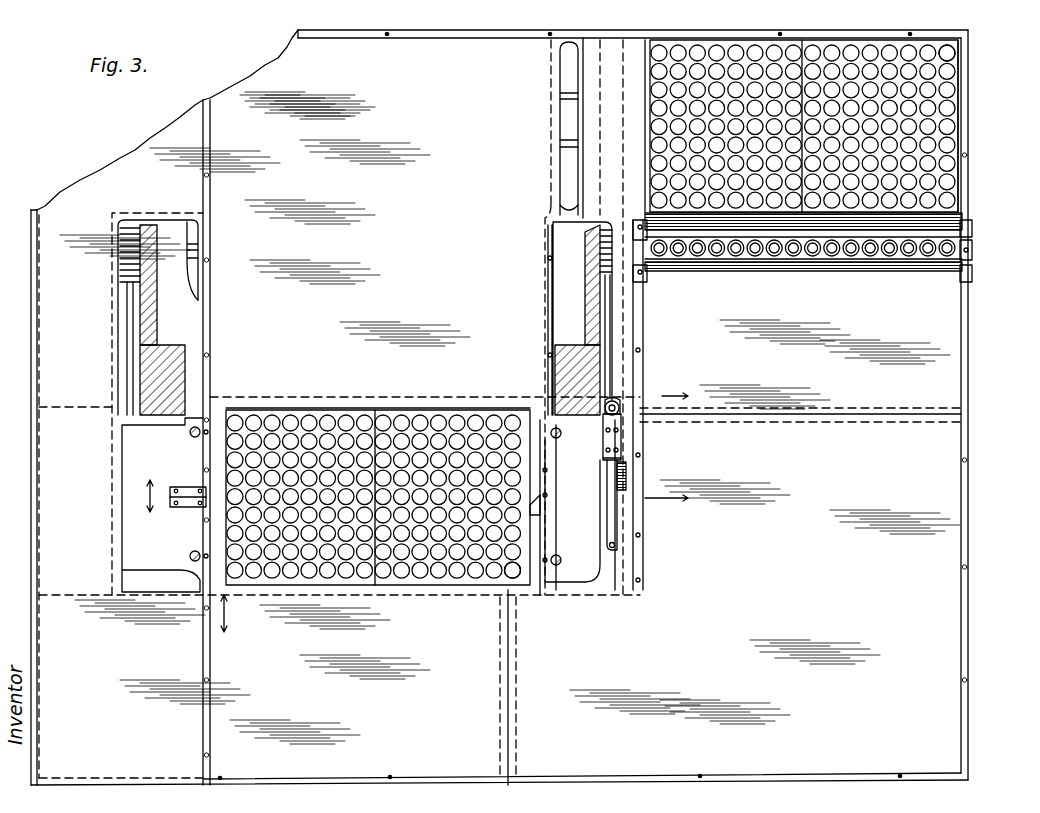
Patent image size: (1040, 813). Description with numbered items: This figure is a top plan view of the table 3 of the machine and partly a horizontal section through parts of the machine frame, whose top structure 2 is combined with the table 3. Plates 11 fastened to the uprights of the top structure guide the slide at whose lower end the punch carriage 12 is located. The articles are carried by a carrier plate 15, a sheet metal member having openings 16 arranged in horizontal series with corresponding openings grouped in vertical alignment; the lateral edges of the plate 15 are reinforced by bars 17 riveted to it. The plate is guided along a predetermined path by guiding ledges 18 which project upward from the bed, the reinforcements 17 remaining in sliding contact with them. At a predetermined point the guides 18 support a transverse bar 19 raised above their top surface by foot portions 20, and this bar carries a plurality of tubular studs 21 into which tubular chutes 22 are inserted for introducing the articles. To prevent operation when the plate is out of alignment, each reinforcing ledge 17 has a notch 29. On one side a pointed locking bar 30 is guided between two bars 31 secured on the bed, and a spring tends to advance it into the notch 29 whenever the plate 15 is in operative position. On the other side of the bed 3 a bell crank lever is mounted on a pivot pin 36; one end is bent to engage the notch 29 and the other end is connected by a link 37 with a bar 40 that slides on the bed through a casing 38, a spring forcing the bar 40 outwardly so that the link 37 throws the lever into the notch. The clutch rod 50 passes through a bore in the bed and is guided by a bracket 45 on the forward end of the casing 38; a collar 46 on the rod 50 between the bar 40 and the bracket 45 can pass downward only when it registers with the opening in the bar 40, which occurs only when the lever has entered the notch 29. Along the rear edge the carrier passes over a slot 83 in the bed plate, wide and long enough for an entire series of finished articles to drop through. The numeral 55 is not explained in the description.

The top structure 2 is at (140, 312).
The table 3 is at (976, 453).
The plates 11 is at (666, 442).
The punch carriage 12 is at (168, 496).
The carrier plate 15 is at (958, 62).
The openings 16 is at (878, 56).
The reinforcing bars 17 is at (640, 45).
The guiding ledges 18 is at (385, 38).
The transverse bar 19 is at (800, 262).
The foot portions 20 is at (648, 280).
The tubular studs 21 is at (958, 238).
The tubular chutes 22 is at (732, 260).
The notch 29 is at (962, 128).
The locking bar 30 is at (175, 498).
The bars 31 is at (190, 486).
The pivot pin 36 is at (568, 590).
The link 37 is at (617, 522).
The casing 38 is at (604, 452).
The sliding bar 40 is at (626, 470).
The bracket 45 is at (602, 426).
The collar 46 is at (618, 408).
The clutch rod 50 is at (620, 420).
The stop block 55 is at (535, 500).
The slot 83 is at (568, 158).